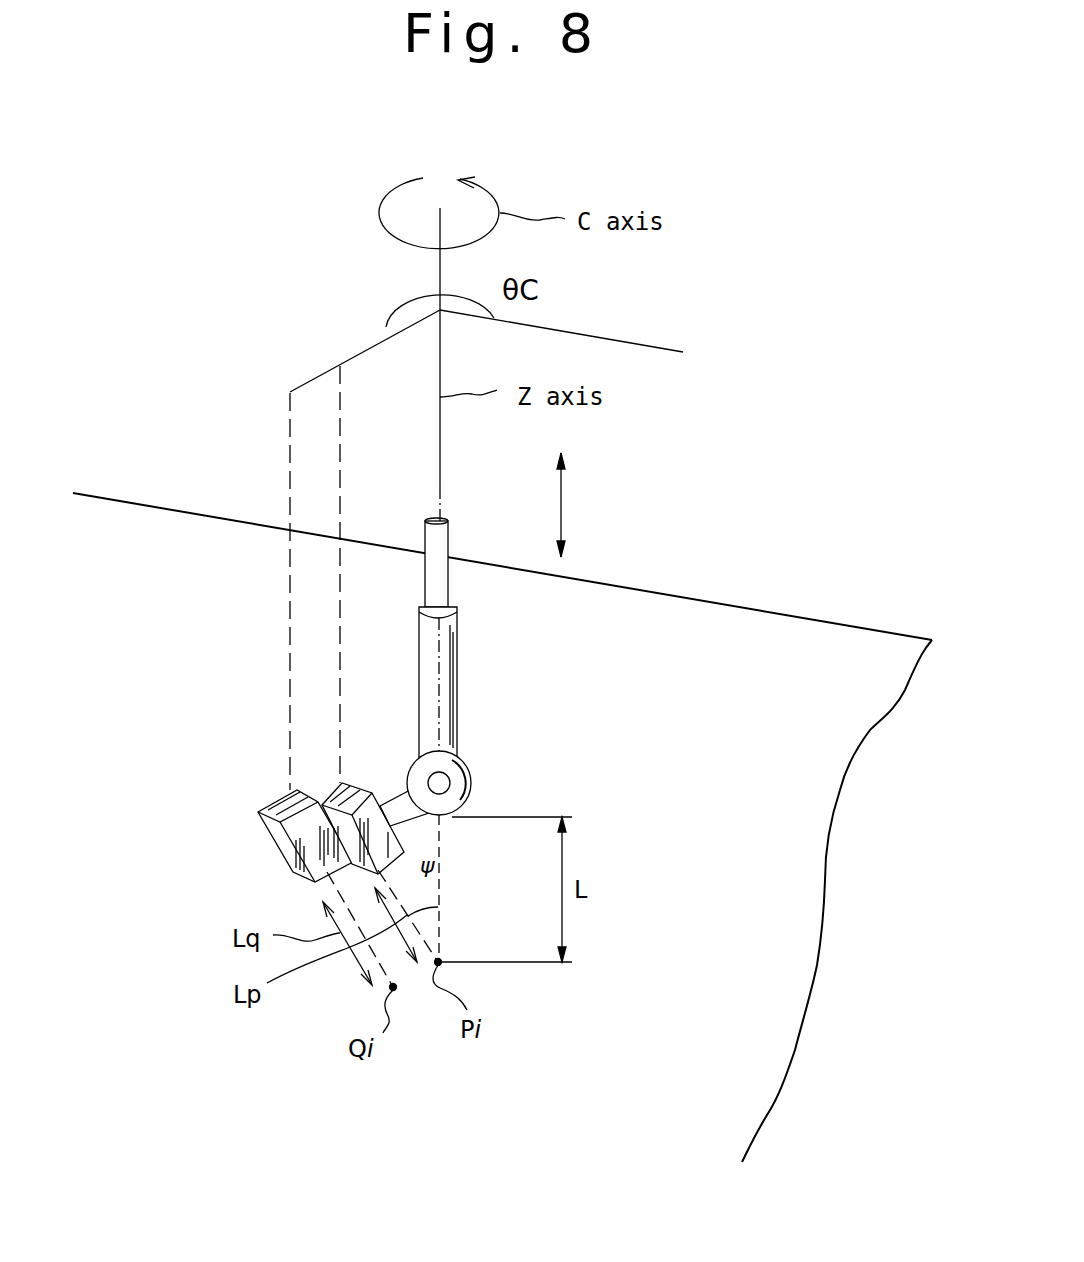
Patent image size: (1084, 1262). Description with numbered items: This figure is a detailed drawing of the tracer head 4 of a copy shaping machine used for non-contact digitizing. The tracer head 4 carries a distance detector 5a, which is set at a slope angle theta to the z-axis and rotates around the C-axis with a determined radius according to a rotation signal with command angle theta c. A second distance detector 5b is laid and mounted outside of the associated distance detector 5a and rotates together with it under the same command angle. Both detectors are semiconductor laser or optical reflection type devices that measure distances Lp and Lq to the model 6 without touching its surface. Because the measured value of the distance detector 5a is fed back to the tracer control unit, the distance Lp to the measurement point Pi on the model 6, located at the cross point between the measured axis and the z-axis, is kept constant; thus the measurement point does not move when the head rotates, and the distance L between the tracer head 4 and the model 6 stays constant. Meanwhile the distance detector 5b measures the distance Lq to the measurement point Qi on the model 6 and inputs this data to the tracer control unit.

The tracer head 4 is at (457, 663).
The distance detector 5a is at (358, 838).
The distance detector 5b is at (262, 826).
The model 6 is at (842, 622).